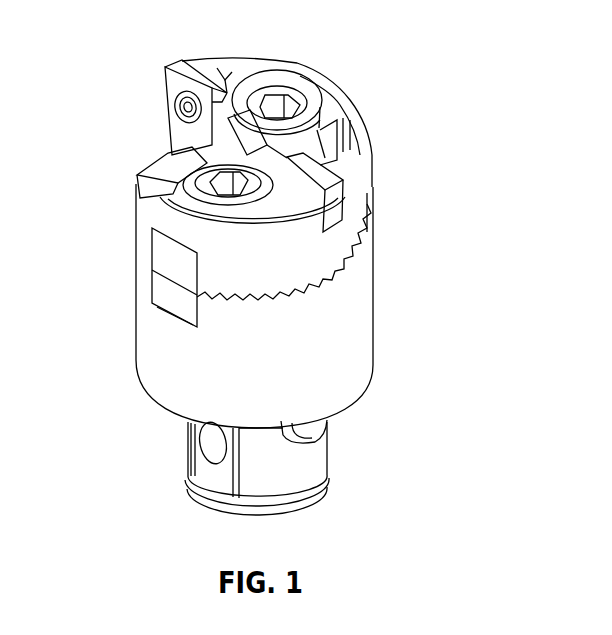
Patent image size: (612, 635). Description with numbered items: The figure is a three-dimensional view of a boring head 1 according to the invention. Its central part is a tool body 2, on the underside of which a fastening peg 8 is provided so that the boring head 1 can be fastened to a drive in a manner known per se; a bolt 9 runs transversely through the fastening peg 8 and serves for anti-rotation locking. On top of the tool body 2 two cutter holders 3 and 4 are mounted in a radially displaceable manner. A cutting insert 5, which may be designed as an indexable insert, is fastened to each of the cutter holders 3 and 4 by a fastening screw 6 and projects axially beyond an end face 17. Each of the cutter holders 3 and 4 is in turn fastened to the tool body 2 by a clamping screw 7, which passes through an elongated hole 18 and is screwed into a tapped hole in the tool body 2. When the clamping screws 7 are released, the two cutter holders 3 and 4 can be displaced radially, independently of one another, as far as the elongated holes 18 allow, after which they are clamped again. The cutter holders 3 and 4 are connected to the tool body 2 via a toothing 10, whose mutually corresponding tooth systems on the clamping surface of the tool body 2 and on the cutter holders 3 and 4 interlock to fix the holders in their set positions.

The boring head 1 is at (386, 183).
The tool body 2 is at (373, 325).
The cutter holder 3 is at (357, 112).
The cutter holder 4 is at (136, 187).
The cutting insert 5 is at (173, 84).
The fastening screw 6 is at (176, 104).
The clamping screw 7 is at (307, 103).
The fastening peg 8 is at (313, 461).
The bolt 9 is at (313, 431).
The toothing 10 is at (357, 262).
The end face 17 is at (227, 79).
The elongated hole 18 is at (330, 158).